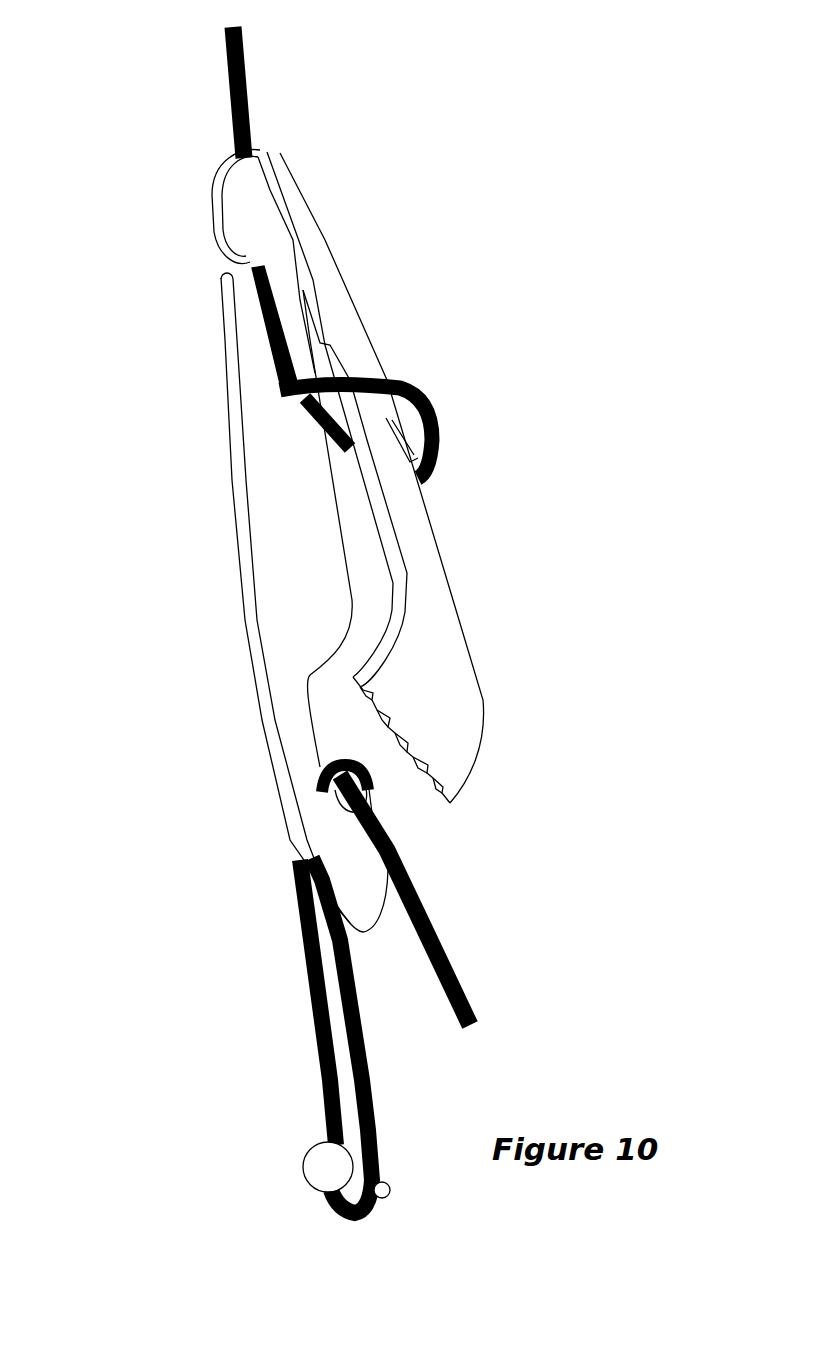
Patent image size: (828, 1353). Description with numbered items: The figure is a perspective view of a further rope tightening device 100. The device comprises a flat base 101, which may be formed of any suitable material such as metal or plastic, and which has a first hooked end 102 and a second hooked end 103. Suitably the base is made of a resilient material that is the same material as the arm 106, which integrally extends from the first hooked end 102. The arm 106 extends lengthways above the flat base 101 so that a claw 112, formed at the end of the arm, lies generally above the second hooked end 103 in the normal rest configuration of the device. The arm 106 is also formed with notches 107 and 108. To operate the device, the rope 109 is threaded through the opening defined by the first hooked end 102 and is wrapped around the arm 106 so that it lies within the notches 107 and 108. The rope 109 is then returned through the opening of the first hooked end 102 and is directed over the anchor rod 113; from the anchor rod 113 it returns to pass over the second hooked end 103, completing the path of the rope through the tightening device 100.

The rope tightening device 100 is at (245, 647).
The flat base 101 is at (272, 485).
The first hooked end 102 is at (247, 243).
The second hooked end 103 is at (333, 845).
The arm 106 is at (433, 570).
The notch 107 is at (438, 462).
The notch 108 is at (430, 423).
The rope 109 is at (250, 117).
The claw 112 is at (427, 767).
The anchor rod 113 is at (322, 1160).